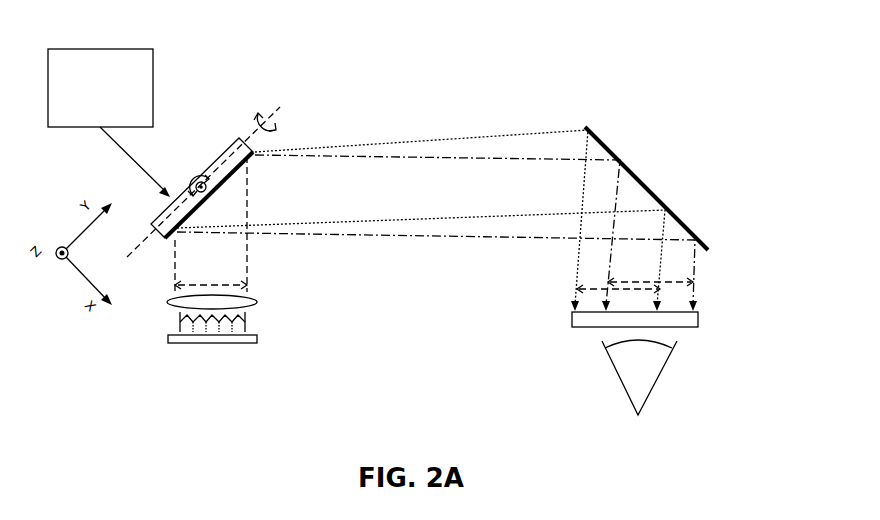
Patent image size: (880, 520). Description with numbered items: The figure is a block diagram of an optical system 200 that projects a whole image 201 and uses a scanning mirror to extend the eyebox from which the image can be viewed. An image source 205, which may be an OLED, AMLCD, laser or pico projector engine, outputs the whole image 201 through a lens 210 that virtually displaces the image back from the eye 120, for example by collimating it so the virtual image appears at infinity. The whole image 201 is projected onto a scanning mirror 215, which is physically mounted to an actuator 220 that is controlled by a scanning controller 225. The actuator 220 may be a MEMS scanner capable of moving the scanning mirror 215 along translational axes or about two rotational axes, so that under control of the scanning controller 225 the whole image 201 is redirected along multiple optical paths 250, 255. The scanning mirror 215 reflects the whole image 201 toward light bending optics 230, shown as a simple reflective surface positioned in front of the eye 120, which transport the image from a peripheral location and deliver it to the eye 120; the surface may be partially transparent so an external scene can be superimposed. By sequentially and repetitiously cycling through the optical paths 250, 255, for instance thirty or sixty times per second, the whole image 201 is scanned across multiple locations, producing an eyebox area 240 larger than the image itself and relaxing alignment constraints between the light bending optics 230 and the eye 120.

The optical system 200 is at (436, 280).
The eye 120 is at (626, 368).
The whole image 201 is at (225, 285).
The image source 205 is at (195, 343).
The lens 210 is at (256, 302).
The scanning mirror 215 is at (238, 168).
The actuator 220 is at (233, 137).
The scanning controller 225 is at (140, 107).
The light bending optics 230 is at (645, 183).
The eyebox area 240 is at (698, 320).
The optical path 250 is at (385, 143).
The optical path 255 is at (473, 157).